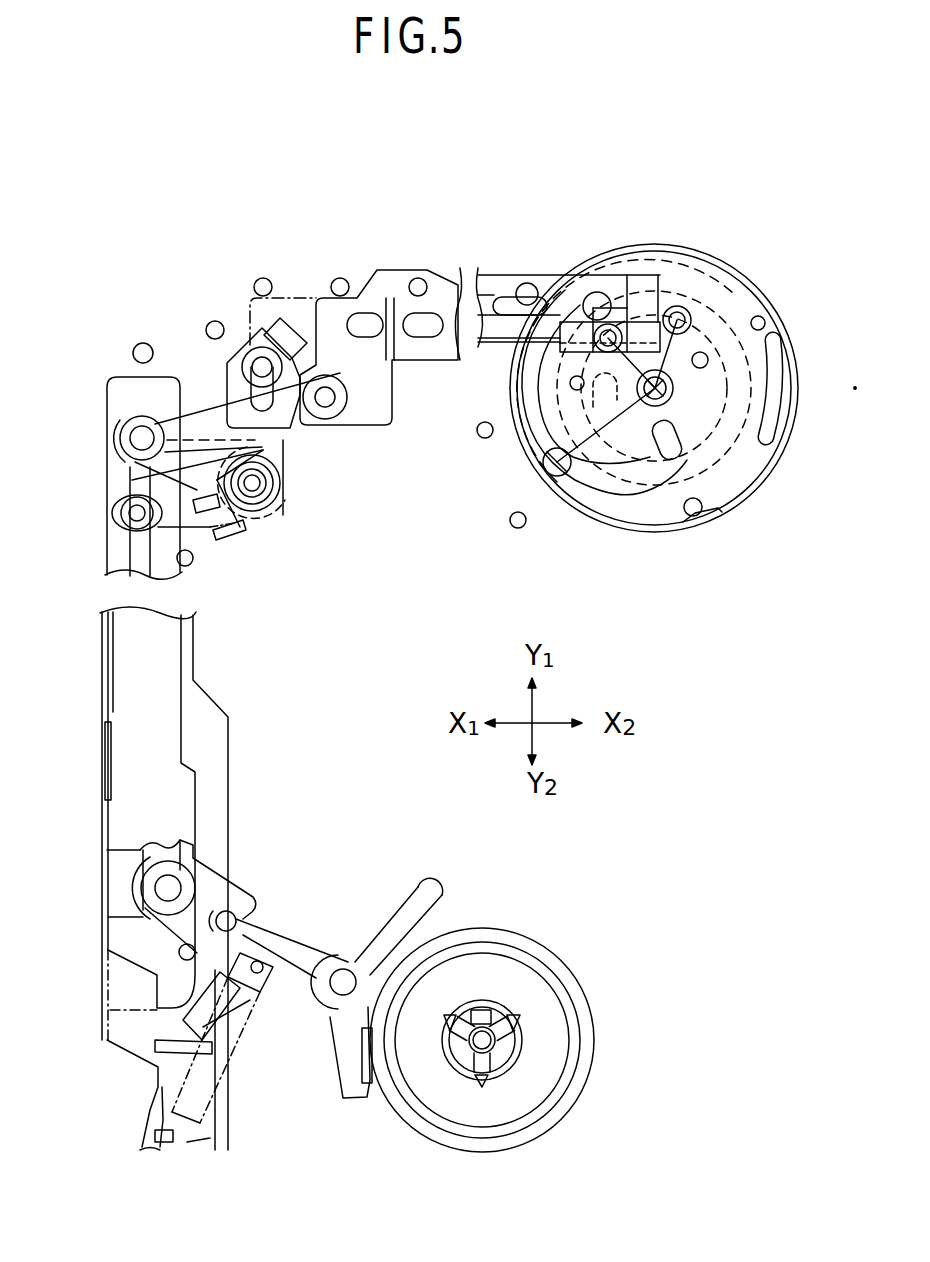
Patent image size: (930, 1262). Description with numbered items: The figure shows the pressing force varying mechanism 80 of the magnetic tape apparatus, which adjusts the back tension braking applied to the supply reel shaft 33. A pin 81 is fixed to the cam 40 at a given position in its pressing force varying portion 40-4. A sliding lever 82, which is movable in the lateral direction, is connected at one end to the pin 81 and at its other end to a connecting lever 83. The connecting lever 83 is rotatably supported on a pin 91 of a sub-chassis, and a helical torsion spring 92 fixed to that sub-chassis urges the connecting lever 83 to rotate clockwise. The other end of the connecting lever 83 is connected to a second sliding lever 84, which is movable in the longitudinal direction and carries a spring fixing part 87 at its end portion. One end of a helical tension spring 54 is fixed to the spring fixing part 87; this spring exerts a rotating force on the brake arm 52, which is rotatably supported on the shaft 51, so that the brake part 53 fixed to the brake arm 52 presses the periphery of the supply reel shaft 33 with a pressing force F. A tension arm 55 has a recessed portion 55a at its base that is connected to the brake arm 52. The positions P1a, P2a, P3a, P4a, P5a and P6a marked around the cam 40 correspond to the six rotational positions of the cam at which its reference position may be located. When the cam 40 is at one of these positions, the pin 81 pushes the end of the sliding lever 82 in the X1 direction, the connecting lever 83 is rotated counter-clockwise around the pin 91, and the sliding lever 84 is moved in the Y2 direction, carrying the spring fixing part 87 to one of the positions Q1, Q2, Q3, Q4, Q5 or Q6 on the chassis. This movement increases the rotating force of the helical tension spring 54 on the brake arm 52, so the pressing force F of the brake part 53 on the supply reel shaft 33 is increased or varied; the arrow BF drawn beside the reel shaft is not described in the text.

The pressing force varying mechanism 80 is at (697, 119).
The cam 40 is at (750, 492).
The pressing force varying portion 40-4 is at (703, 327).
The pin 81 is at (683, 312).
The sliding lever 82 is at (452, 277).
The connecting lever 83 is at (200, 395).
The sliding lever 84 is at (98, 830).
The pin 91 is at (255, 490).
The helical torsion spring 92 is at (290, 455).
The shaft 51 is at (350, 973).
The brake arm 52 is at (337, 958).
The brake part 53 is at (365, 1080).
The helical tension spring 54 is at (214, 1069).
The tension arm 55 is at (226, 887).
The recessed portion 55a is at (253, 917).
The spring fixing part 87 is at (150, 1140).
The supply reel shaft 33 is at (587, 1083).
The position P1a is at (715, 227).
The position P2a is at (685, 223).
The position P3a is at (632, 222).
The position P4a is at (602, 227).
The position P5a is at (562, 247).
The position P6a is at (537, 262).
The position Q1 is at (88, 1047).
The position Q2 is at (59, 1063).
The position Q3 is at (88, 1087).
The position Q4 is at (88, 1102).
The position Q5 is at (90, 1123).
The position Q6 is at (88, 1143).
The pressing force F is at (374, 1050).
The braking force direction BF is at (377, 1102).